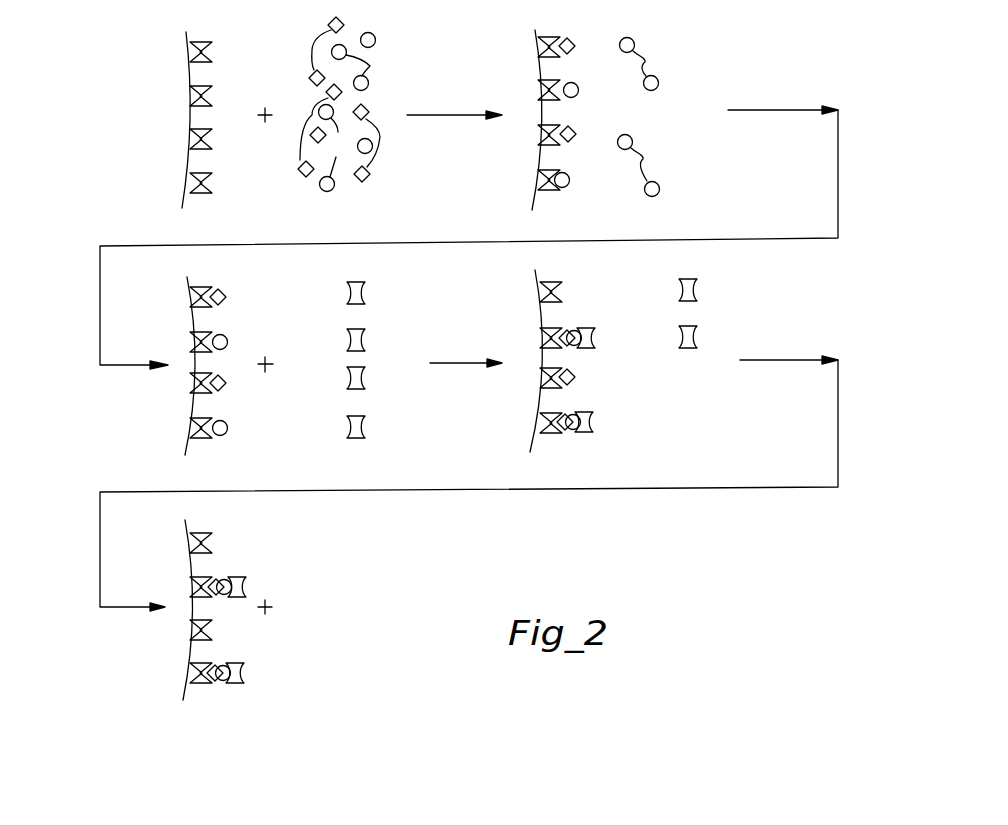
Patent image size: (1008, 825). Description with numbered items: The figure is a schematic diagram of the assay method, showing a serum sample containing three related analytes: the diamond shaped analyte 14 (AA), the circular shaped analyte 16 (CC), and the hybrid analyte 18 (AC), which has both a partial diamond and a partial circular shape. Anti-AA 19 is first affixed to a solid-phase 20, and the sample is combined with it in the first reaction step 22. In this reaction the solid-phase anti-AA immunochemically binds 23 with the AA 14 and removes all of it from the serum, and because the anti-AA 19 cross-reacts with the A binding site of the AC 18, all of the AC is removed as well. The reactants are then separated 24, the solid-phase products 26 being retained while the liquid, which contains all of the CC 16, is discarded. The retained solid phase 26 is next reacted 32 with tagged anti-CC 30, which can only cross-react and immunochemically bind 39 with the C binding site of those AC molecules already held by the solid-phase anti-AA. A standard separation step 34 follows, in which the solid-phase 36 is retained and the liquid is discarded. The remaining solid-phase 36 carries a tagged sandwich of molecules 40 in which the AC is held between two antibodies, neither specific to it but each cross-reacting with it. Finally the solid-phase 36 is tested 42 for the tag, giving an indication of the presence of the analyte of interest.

The diamond shaped analyte 14 is at (584, 138).
The circular shaped analyte 16 is at (497, 117).
The hybrid analyte 18 is at (376, 38).
The anti-AA 19 is at (213, 60).
The solid-phase 20 is at (344, 120).
The first reaction step 22 is at (472, 117).
The immunochemical binding 23 is at (548, 35).
The separation step 24 is at (797, 111).
The solid-phase products 26 is at (362, 267).
The tagged anti-CC 30 is at (347, 300).
The second reaction 32 is at (472, 365).
The second separation step 34 is at (797, 361).
The solid-phase 36 is at (368, 485).
The immunochemical binding 39 is at (572, 328).
The tagged sandwich of molecules 40 is at (572, 410).
The test step 42 is at (327, 613).